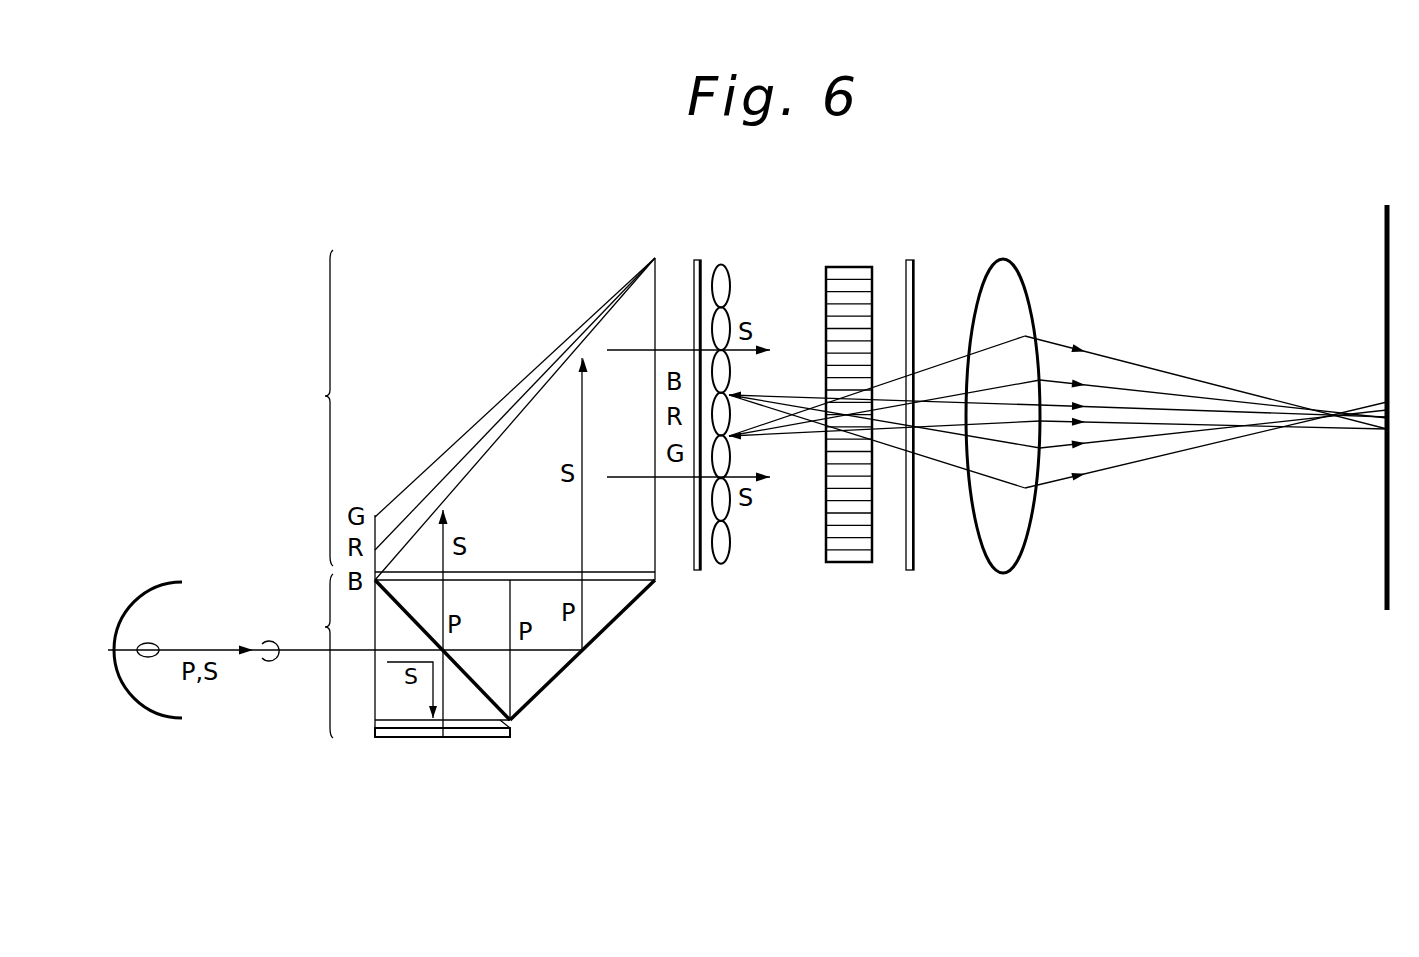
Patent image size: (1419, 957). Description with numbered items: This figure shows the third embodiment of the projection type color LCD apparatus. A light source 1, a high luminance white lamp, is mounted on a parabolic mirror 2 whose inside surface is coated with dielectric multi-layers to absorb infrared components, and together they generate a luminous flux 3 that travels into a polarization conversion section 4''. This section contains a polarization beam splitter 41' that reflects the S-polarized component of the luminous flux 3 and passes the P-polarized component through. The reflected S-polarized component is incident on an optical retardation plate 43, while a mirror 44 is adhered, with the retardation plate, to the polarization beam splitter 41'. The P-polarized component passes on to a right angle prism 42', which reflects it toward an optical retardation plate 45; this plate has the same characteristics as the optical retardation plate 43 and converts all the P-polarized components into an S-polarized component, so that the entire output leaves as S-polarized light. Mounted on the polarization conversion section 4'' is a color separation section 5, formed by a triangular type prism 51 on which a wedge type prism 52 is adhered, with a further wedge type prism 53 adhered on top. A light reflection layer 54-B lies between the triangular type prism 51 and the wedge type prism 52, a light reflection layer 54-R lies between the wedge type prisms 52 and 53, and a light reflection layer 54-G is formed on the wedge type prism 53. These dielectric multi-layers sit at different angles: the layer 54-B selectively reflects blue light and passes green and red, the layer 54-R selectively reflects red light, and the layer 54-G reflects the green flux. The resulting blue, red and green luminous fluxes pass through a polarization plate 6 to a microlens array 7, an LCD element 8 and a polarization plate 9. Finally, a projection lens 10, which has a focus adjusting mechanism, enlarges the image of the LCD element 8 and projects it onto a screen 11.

The light source 1 is at (150, 657).
The parabolic mirror 2 is at (160, 718).
The luminous flux 3 is at (272, 641).
The polarization conversion section 4'' is at (462, 498).
The color separation section 5 is at (325, 396).
The polarization plate 6 is at (700, 572).
The microlens array 7 is at (729, 553).
The LCD element 8 is at (858, 563).
The polarization plate 9 is at (915, 553).
The projection lens 10 is at (1002, 262).
The screen 11 is at (1383, 252).
The polarization beam splitter 41' is at (442, 751).
The right angle prism 42' is at (582, 650).
The optical retardation plate 43 is at (512, 727).
The mirror 44 is at (465, 738).
The optical retardation plate 45 is at (656, 578).
The triangular type prism 51 is at (395, 545).
The wedge type prism 52 is at (415, 515).
The wedge type prism 53 is at (430, 470).
The light reflection layer 54-G is at (568, 330).
The light reflection layer 54-R is at (537, 372).
The light reflection layer 54-B is at (488, 432).